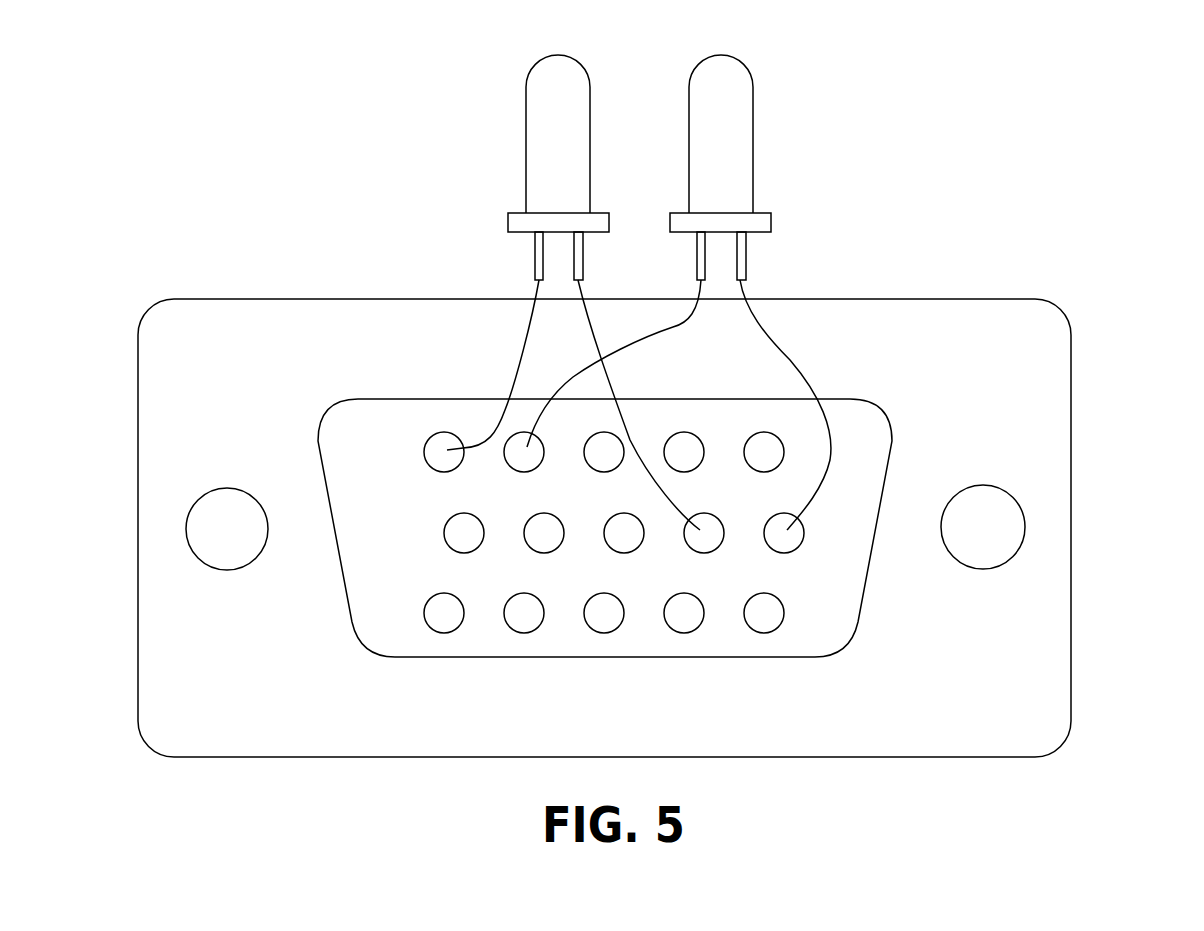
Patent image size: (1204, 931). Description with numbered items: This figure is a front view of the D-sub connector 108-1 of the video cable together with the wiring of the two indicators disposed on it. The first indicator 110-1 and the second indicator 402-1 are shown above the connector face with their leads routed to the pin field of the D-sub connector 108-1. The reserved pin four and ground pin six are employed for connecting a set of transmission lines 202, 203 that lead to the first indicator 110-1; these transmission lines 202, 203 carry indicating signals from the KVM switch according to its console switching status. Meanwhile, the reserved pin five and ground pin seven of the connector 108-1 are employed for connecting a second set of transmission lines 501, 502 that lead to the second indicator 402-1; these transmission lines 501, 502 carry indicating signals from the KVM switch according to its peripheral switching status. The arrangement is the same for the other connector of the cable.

The D-sub connector 108-1 is at (1025, 440).
The second indicator 402-1 is at (560, 177).
The first indicator 110-1 is at (740, 175).
The transmission line 501 is at (520, 357).
The transmission line 502 is at (592, 328).
The transmission line 202 is at (673, 327).
The transmission line 203 is at (780, 352).